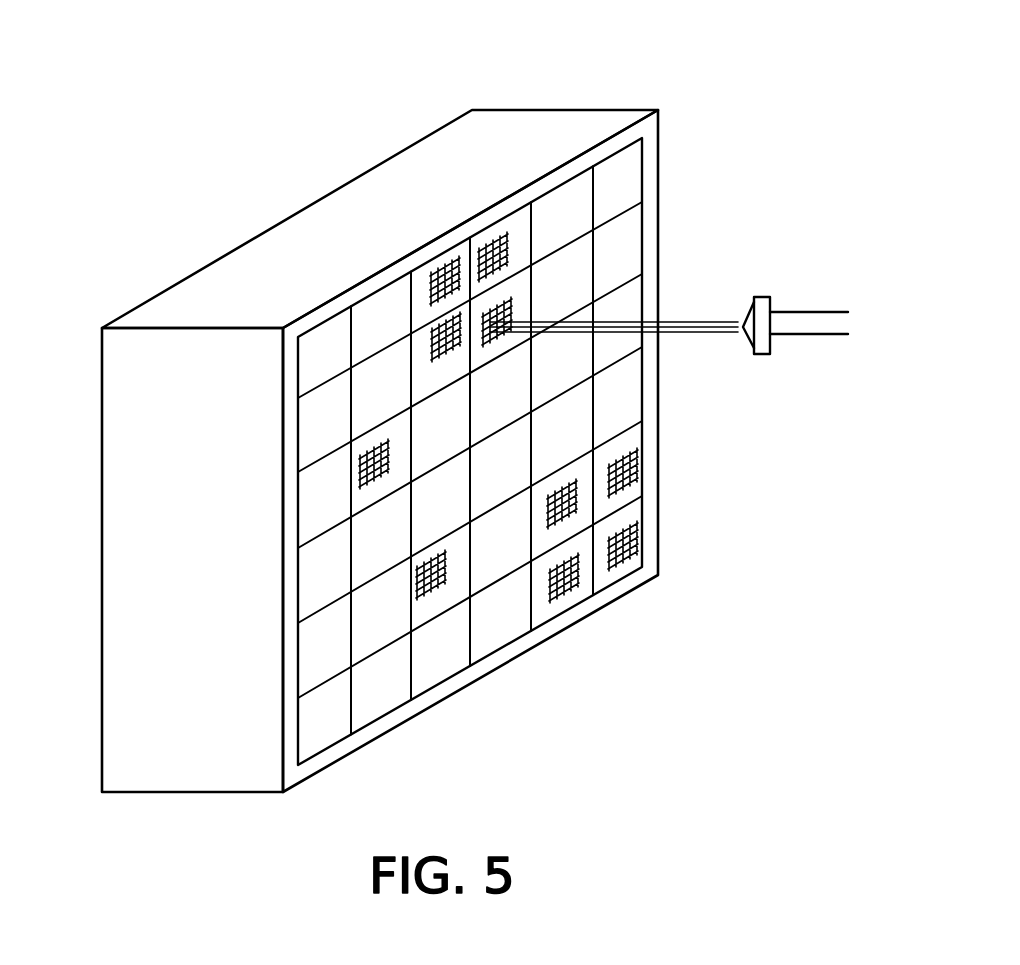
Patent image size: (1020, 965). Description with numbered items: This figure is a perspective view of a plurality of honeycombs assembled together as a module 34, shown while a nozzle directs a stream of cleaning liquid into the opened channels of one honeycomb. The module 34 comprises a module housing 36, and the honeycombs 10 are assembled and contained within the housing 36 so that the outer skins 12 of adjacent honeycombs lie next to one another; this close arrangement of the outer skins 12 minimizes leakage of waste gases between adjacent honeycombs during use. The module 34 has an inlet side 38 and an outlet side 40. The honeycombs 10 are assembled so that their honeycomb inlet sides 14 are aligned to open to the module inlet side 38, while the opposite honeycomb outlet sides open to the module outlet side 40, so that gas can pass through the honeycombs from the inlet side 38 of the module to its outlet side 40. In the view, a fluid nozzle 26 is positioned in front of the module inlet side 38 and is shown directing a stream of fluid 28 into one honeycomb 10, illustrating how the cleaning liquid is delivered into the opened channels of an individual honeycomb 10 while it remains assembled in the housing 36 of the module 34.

The honeycomb 10 is at (522, 290).
The outer skin 12 is at (597, 210).
The honeycomb inlet side 14 is at (632, 442).
The fluid nozzle 26 is at (762, 296).
The stream of fluid 28 is at (700, 320).
The module 34 is at (354, 405).
The module housing 36 is at (590, 132).
The module inlet side 38 is at (292, 457).
The module outlet side 40 is at (102, 475).